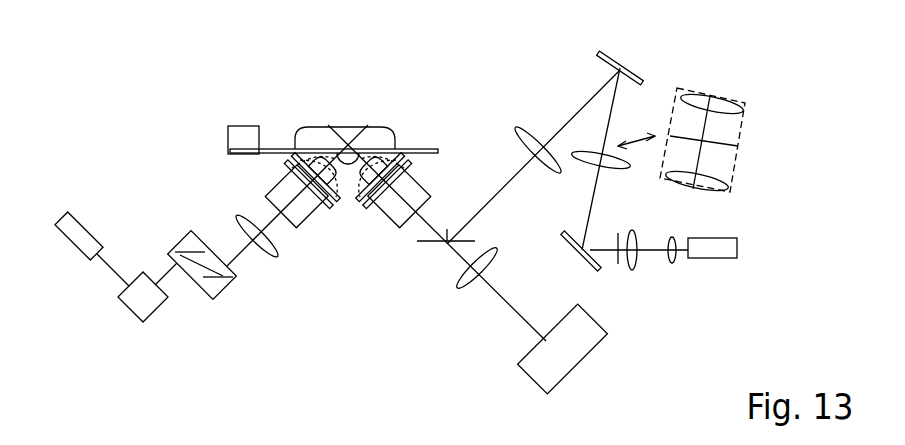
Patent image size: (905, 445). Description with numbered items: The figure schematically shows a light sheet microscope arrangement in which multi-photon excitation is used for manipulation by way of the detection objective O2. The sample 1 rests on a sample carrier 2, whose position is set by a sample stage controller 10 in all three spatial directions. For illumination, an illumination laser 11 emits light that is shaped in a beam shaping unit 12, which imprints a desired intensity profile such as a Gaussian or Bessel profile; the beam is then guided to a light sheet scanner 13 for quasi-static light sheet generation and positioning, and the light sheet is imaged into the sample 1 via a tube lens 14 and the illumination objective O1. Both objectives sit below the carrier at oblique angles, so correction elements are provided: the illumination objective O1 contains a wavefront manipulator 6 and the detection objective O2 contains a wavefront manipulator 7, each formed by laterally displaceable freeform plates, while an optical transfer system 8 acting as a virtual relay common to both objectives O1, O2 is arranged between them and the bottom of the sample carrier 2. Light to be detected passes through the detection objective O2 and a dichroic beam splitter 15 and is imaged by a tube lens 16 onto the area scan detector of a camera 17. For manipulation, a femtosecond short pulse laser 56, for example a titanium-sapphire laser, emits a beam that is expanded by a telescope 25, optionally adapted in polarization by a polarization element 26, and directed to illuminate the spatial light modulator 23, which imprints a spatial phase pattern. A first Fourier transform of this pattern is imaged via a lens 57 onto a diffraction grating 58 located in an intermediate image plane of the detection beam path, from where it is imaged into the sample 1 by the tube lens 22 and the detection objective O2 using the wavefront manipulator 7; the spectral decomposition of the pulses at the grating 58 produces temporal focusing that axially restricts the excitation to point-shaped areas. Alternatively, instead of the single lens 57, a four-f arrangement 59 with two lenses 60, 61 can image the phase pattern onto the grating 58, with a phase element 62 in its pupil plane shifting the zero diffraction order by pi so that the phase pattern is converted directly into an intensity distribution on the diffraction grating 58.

The sample 1 is at (379, 127).
The sample carrier 2 is at (420, 148).
The wavefront manipulator 6 is at (280, 168).
The wavefront manipulator 7 is at (418, 168).
The optical transfer system 8 is at (350, 176).
The sample stage controller 10 is at (243, 126).
The illumination laser 11 is at (72, 213).
The beam shaping unit 12 is at (136, 303).
The light sheet scanner 13 is at (186, 242).
The tube lens 14 is at (273, 258).
The dichroic beam splitter 15 is at (437, 246).
The tube lens 16 is at (465, 287).
The camera 17 is at (555, 377).
The tube lens 22 is at (536, 146).
The spatial light modulator 23 is at (579, 257).
The telescope 25 is at (630, 270).
The polarization element 26 is at (617, 265).
The femtosecond short pulse laser 56 is at (716, 256).
The lens 57 is at (590, 165).
The diffraction grating 58 is at (644, 76).
The 4f arrangement 59 is at (739, 101).
The lens 60 is at (729, 191).
The lens 61 is at (736, 111).
The phase element 62 is at (727, 144).
The illumination objective O1 is at (296, 230).
The detection objective O2 is at (400, 228).